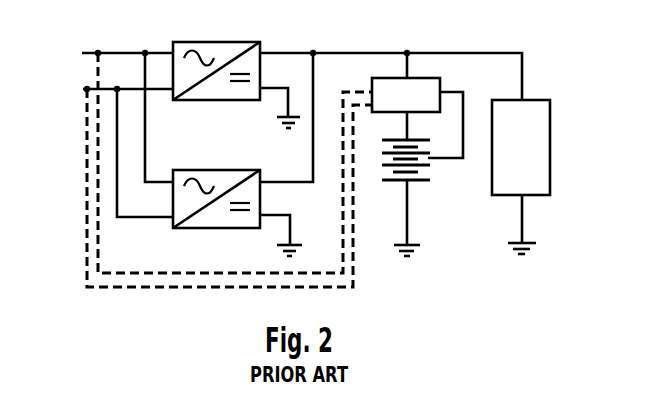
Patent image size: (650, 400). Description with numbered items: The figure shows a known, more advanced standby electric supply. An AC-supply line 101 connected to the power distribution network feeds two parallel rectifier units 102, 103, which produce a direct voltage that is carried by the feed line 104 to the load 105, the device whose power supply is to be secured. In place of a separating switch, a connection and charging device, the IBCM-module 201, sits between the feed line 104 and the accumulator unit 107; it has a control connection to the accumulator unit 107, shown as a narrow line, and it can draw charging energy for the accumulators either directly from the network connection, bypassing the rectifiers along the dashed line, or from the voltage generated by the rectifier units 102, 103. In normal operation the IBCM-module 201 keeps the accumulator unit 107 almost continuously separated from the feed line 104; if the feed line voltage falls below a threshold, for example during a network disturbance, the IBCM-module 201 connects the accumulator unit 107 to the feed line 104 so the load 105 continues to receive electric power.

The AC-supply line 101 is at (83, 48).
The rectifier unit 102 is at (210, 41).
The rectifier unit 103 is at (210, 169).
The feed line 104 is at (372, 51).
The load 105 is at (498, 99).
The accumulator unit 107 is at (424, 170).
The IBCM-module 201 is at (372, 78).